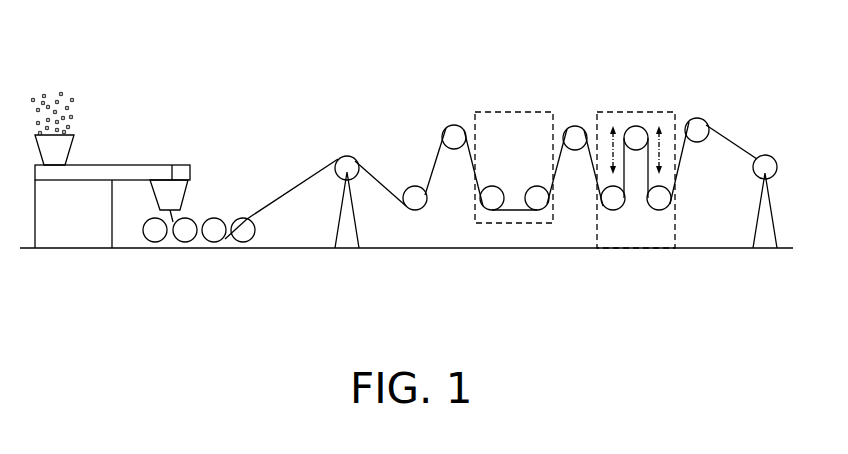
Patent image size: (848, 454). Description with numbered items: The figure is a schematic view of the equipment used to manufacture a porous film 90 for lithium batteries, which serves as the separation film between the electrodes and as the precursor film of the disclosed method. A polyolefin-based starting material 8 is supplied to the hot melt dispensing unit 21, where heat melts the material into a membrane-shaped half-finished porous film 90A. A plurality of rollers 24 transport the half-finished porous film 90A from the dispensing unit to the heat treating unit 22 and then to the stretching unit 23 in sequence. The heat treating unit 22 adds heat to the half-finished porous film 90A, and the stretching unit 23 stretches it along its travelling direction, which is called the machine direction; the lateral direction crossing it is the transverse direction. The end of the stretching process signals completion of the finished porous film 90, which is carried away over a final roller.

The polyolefin-based starting material 8 is at (42, 92).
The hot melt dispensing unit 21 is at (162, 173).
The rollers 24 is at (245, 230).
The half-finished porous film 90A is at (307, 189).
The heat treating unit 22 is at (510, 112).
The stretching unit 23 is at (637, 112).
The porous film 90 is at (732, 142).